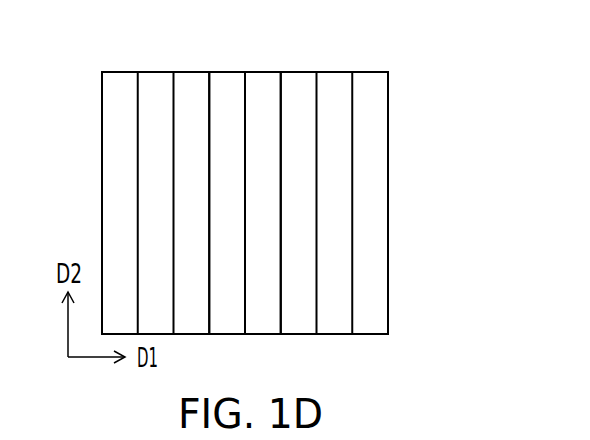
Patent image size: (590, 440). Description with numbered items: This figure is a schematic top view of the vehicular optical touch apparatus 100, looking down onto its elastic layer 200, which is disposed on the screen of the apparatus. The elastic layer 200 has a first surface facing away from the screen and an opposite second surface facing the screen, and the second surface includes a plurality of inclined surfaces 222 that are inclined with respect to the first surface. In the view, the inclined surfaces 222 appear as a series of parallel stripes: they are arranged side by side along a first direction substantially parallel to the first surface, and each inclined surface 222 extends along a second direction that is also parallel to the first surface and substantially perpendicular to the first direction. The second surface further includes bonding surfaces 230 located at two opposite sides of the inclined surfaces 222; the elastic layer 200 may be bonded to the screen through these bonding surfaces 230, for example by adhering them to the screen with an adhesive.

The vehicular optical touch apparatus 100 is at (336, 190).
The elastic layer 200 is at (388, 282).
The inclined surfaces 222 is at (222, 121).
The bonding surfaces 230 is at (370, 172).